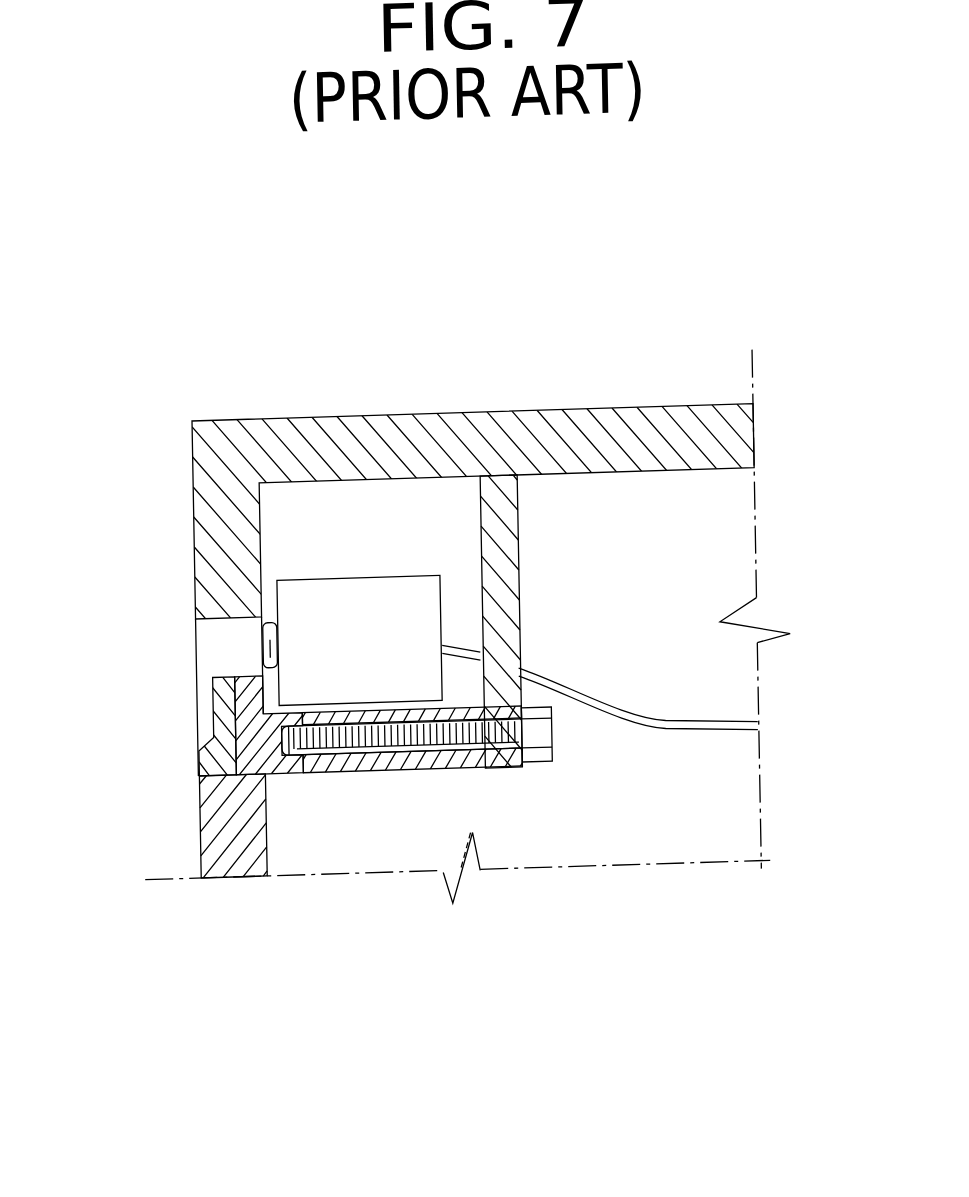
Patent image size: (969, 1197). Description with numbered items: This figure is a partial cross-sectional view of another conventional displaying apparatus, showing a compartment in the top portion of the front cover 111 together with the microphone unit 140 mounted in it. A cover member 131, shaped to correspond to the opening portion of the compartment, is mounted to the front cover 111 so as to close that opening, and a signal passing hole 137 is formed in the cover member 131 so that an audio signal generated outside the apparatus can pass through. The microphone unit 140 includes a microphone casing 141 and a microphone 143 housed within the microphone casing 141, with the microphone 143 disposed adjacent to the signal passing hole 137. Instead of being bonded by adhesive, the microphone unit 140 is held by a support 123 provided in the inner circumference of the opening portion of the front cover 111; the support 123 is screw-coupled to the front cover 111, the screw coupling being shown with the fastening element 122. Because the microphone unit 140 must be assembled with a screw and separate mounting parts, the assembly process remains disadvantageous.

The front cover 111 is at (210, 834).
The bracket nut / fastening member 122 is at (531, 748).
The support 123 is at (501, 780).
The cover member 131 is at (204, 493).
The signal passing hole 137 is at (213, 643).
The microphone unit 140 is at (334, 817).
The microphone casing 141 is at (386, 643).
The microphone 143 is at (253, 662).